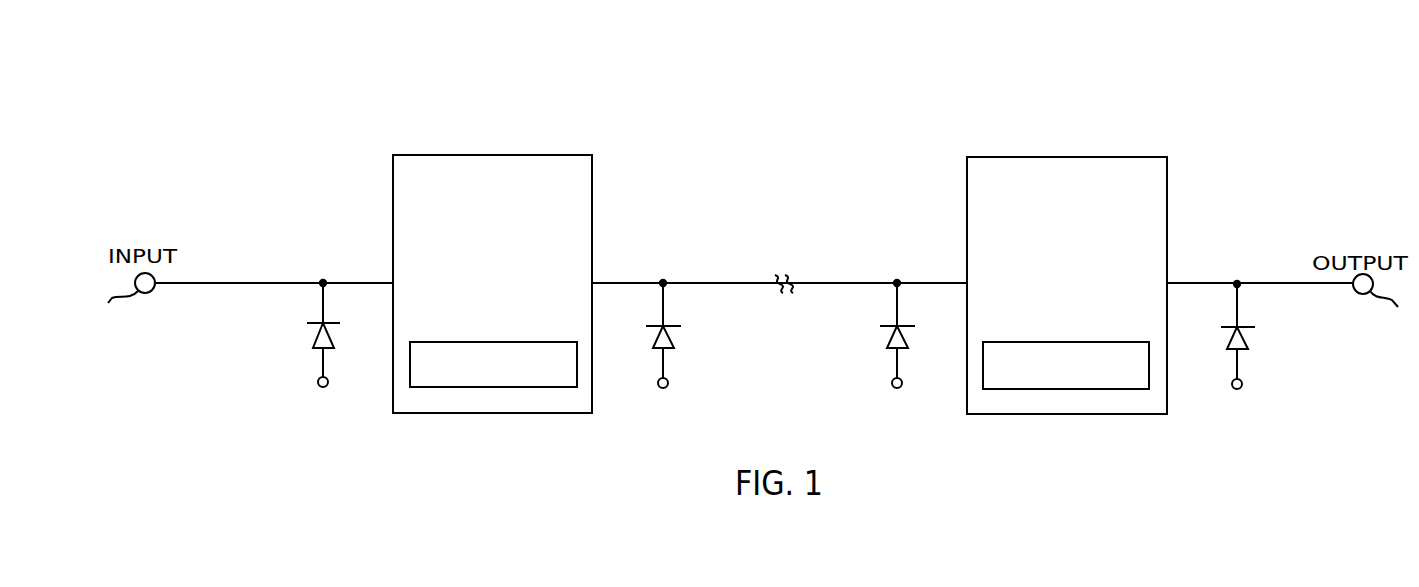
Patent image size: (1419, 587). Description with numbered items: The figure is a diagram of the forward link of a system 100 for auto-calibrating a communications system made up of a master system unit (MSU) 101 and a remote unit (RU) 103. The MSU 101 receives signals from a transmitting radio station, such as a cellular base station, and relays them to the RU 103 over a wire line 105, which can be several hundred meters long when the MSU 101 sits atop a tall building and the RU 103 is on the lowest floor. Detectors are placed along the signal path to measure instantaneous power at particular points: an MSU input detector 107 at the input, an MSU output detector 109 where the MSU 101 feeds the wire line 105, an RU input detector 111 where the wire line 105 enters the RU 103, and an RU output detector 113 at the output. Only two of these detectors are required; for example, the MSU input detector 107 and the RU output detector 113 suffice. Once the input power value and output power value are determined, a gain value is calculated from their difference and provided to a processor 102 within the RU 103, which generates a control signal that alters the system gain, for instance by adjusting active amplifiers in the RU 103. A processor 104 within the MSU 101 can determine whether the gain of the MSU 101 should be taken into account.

The system 100 is at (1339, 34).
The master system unit (MSU) 101 is at (527, 155).
The processor 102 is at (1085, 342).
The remote unit (RU) 103 is at (1103, 157).
The processor 104 is at (512, 342).
The wire line 105 is at (707, 283).
The MSU input detector 107 is at (323, 388).
The MSU output detector 109 is at (663, 388).
The RU input detector 111 is at (897, 388).
The RU output detector 113 is at (1237, 389).